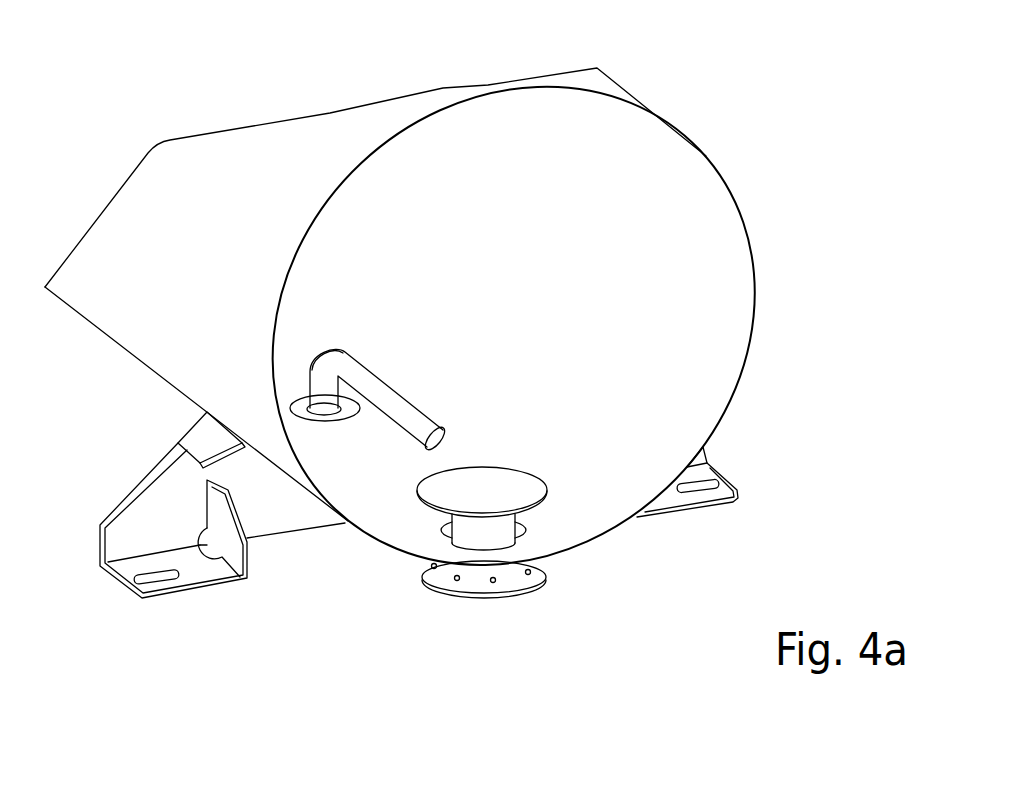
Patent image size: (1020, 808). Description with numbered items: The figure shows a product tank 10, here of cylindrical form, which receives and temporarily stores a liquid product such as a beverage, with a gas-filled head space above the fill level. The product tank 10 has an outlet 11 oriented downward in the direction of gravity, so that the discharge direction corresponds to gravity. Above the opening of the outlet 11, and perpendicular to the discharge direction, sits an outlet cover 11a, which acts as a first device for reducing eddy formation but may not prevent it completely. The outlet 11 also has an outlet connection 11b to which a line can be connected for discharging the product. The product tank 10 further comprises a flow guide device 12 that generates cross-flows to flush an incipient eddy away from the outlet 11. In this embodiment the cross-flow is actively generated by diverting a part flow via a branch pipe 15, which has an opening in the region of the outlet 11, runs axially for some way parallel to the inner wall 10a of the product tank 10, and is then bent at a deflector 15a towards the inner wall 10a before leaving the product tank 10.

The product tank 10 is at (742, 143).
The inner wall 10a is at (675, 343).
The outlet 11 is at (521, 584).
The outlet cover 11a is at (470, 493).
The outlet connection 11b is at (497, 580).
The flow guide device 12 is at (407, 375).
The branch pipe 15 is at (378, 398).
The deflector 15a is at (323, 358).